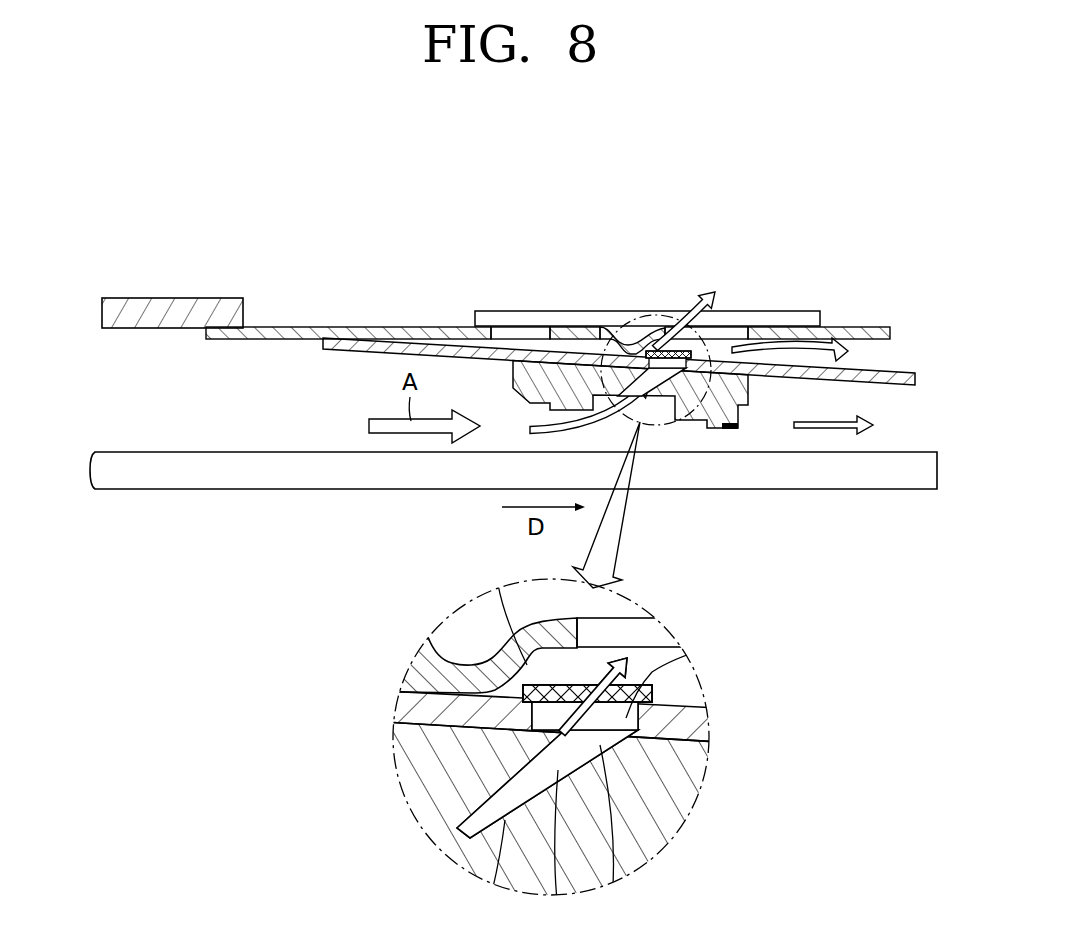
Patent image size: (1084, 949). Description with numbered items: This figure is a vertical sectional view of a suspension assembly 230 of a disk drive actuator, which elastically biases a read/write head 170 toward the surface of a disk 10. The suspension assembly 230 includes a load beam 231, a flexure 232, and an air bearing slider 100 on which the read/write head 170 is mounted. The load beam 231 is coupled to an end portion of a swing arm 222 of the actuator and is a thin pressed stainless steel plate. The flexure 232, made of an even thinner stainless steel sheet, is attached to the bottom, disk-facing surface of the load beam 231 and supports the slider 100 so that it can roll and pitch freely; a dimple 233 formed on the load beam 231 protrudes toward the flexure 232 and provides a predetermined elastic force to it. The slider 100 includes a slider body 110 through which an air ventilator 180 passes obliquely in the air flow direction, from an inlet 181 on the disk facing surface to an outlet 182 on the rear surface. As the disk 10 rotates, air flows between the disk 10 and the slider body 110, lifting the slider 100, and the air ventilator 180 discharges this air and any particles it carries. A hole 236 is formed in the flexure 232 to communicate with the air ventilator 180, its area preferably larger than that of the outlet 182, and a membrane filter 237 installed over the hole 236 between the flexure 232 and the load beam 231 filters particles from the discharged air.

The disk 10 is at (826, 472).
The air bearing slider 100 is at (510, 421).
The slider body 110 is at (725, 386).
The read/write head 170 is at (731, 433).
The air ventilator 180 is at (672, 405).
The inlet 181 is at (505, 820).
The outlet 182 is at (600, 745).
The swing arm 222 is at (172, 300).
The suspension assembly 230 is at (496, 270).
The load beam 231 is at (845, 323).
The flexure 232 is at (903, 372).
The dimple 233 is at (618, 330).
The hole 236 is at (653, 343).
The filter 237 is at (675, 350).